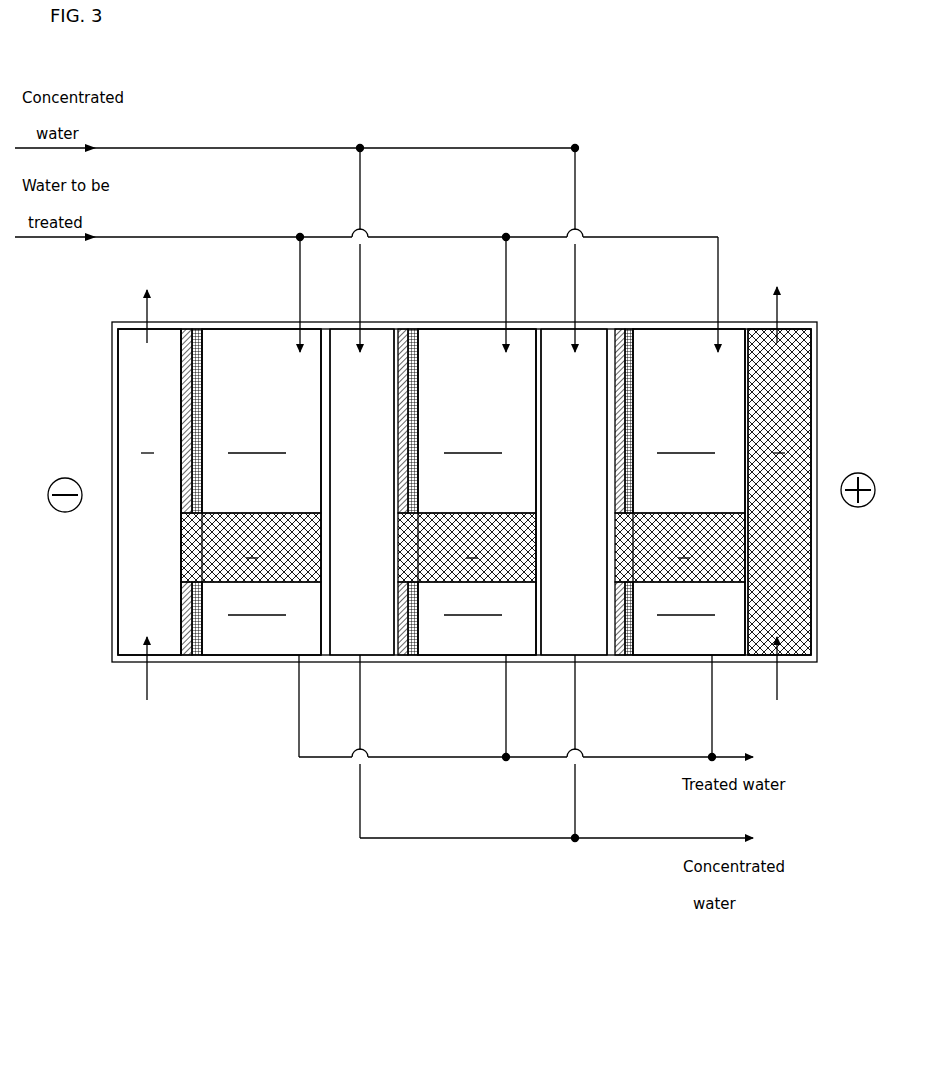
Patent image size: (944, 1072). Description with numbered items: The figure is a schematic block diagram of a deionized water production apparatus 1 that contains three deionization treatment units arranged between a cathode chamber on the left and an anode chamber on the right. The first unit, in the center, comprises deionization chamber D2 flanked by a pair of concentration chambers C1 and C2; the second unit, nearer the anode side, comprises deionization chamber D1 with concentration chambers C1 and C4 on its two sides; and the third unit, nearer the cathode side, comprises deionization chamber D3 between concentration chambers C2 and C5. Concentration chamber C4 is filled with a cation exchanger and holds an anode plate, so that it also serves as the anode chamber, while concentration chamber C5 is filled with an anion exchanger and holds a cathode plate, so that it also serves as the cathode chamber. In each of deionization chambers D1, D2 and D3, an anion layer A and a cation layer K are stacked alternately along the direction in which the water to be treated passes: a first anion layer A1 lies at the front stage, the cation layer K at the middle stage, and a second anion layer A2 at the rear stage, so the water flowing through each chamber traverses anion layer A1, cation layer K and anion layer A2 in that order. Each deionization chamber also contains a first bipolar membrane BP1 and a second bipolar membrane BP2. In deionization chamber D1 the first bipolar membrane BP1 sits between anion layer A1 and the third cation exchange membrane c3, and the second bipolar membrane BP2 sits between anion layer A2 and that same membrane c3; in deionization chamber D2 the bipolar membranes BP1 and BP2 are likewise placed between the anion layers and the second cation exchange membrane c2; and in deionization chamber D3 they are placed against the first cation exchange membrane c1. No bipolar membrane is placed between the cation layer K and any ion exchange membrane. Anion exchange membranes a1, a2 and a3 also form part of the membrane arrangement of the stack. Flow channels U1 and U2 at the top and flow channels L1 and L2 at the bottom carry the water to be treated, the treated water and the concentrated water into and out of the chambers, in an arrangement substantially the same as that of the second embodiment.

The electrodialysis apparatus 1 is at (112, 354).
The flow channel U1 is at (185, 237).
The flow channel U2 is at (320, 148).
The concentration chamber C5 is at (128, 341).
The concentration chamber C4 is at (797, 343).
The concentration chamber C2 is at (334, 348).
The concentration chamber C1 is at (545, 348).
The deionization chamber D3 is at (252, 348).
The deionization chamber D2 is at (463, 348).
The deionization chamber D1 is at (675, 348).
The first bipolar membrane BP1 is at (215, 282).
The second bipolar membrane BP2 is at (186, 655).
The cation layer K is at (496, 492).
The anion layer A is at (149, 492).
The first anion layer A1 is at (473, 421).
The second anion layer A2 is at (473, 618).
The first cation exchange membrane c1 is at (150, 656).
The second cation exchange membrane c2 is at (380, 655).
The third cation exchange membrane c3 is at (600, 655).
The anion exchange membrane a1 is at (322, 655).
The anion exchange membrane a2 is at (535, 655).
The anion exchange membrane a3 is at (740, 655).
The flow channel L1 is at (299, 725).
The flow channel L2 is at (390, 840).